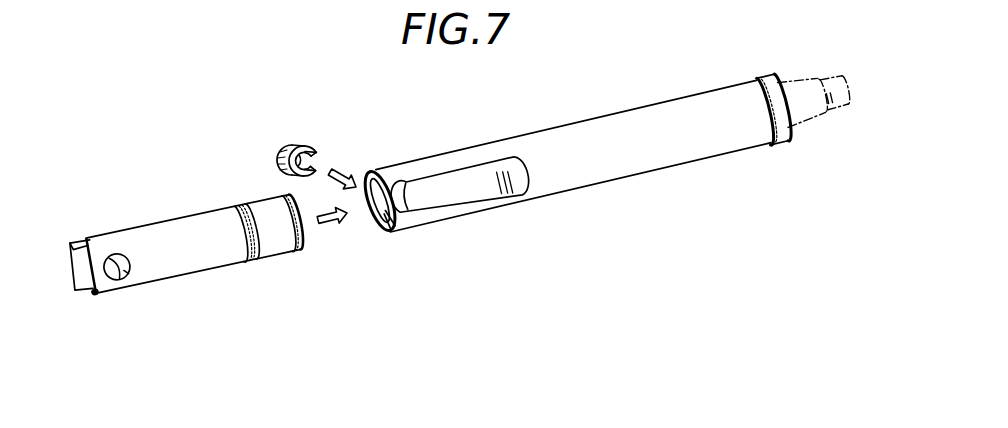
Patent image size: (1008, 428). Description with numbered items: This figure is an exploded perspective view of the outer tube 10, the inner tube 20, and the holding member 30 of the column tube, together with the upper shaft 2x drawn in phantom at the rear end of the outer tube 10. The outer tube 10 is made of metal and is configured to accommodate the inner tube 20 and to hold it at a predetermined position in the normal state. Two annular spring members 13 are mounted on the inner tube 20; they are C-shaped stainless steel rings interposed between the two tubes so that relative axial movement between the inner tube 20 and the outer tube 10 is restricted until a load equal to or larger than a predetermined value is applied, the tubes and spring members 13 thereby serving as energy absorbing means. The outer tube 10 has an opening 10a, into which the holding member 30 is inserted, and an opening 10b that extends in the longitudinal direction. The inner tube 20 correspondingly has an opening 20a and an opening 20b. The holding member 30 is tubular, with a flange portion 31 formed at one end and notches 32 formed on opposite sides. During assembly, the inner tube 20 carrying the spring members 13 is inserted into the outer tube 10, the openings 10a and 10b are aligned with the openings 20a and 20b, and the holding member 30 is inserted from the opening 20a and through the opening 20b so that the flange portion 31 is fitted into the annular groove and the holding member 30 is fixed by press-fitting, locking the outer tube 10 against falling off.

The outer tube 10 is at (634, 178).
The opening 10a is at (381, 226).
The opening 10b is at (462, 199).
The annular spring member 13 is at (245, 261).
The inner tube 20 is at (202, 278).
The opening 20a is at (113, 257).
The opening 20b is at (121, 279).
The upper shaft 2x is at (801, 82).
The holding member 30 is at (302, 142).
The flange portion 31 is at (284, 149).
The notch 32 is at (317, 167).